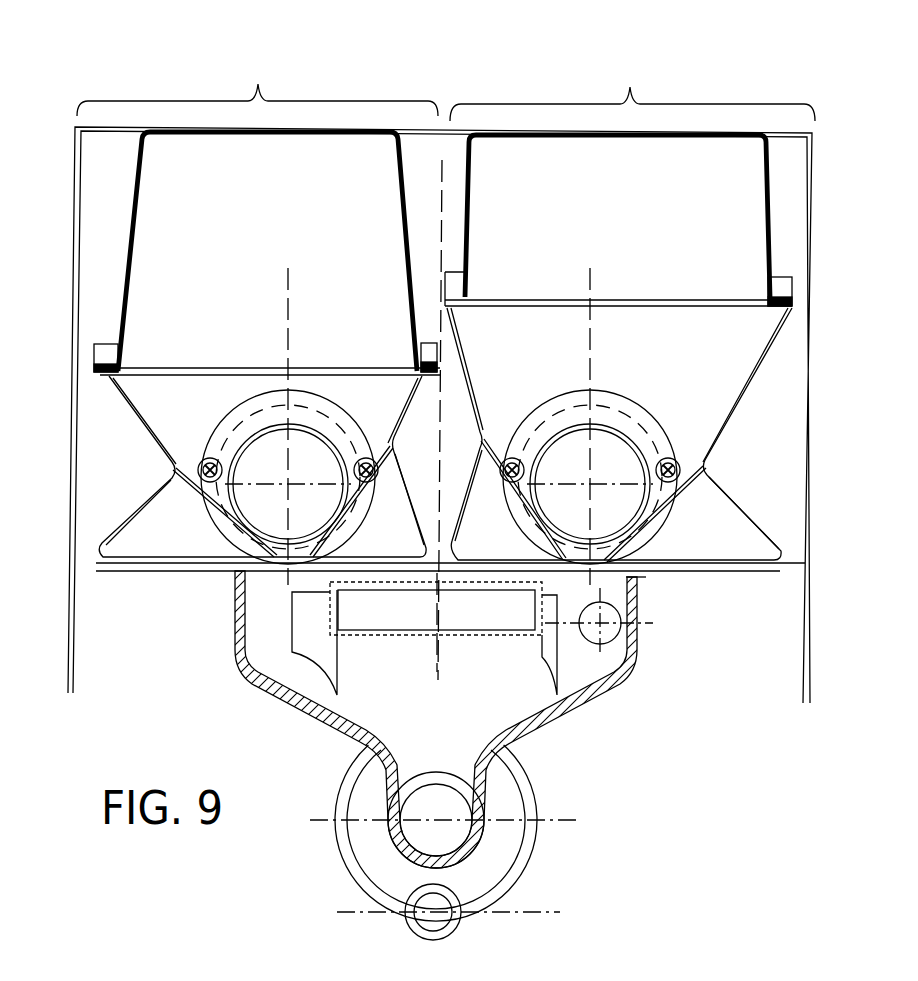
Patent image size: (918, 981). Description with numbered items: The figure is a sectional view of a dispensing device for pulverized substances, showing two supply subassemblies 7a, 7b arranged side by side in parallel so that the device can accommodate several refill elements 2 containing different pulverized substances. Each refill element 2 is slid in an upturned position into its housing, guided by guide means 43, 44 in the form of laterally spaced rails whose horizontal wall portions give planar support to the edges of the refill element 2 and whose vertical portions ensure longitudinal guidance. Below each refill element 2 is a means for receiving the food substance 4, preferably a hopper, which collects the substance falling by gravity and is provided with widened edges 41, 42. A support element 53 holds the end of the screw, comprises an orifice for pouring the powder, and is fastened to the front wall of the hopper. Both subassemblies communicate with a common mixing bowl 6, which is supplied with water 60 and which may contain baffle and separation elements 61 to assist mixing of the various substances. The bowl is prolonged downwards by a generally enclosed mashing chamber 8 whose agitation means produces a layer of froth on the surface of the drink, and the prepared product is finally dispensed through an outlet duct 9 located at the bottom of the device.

The refill element 2 is at (343, 238).
The means for receiving the food substance 4 is at (713, 367).
The mixing bowl 6 is at (573, 728).
The supply subassembly 7a is at (257, 88).
The supply subassembly 7b is at (632, 91).
The mashing chamber 8 is at (435, 820).
The outlet duct 9 is at (438, 918).
The widened edge 41 is at (165, 393).
The widened edge 42 is at (422, 407).
The guide means 43 is at (107, 337).
The guide means 44 is at (443, 352).
The support element 53 is at (422, 400).
The water 60 is at (622, 610).
The baffle and separation elements 61 is at (315, 632).